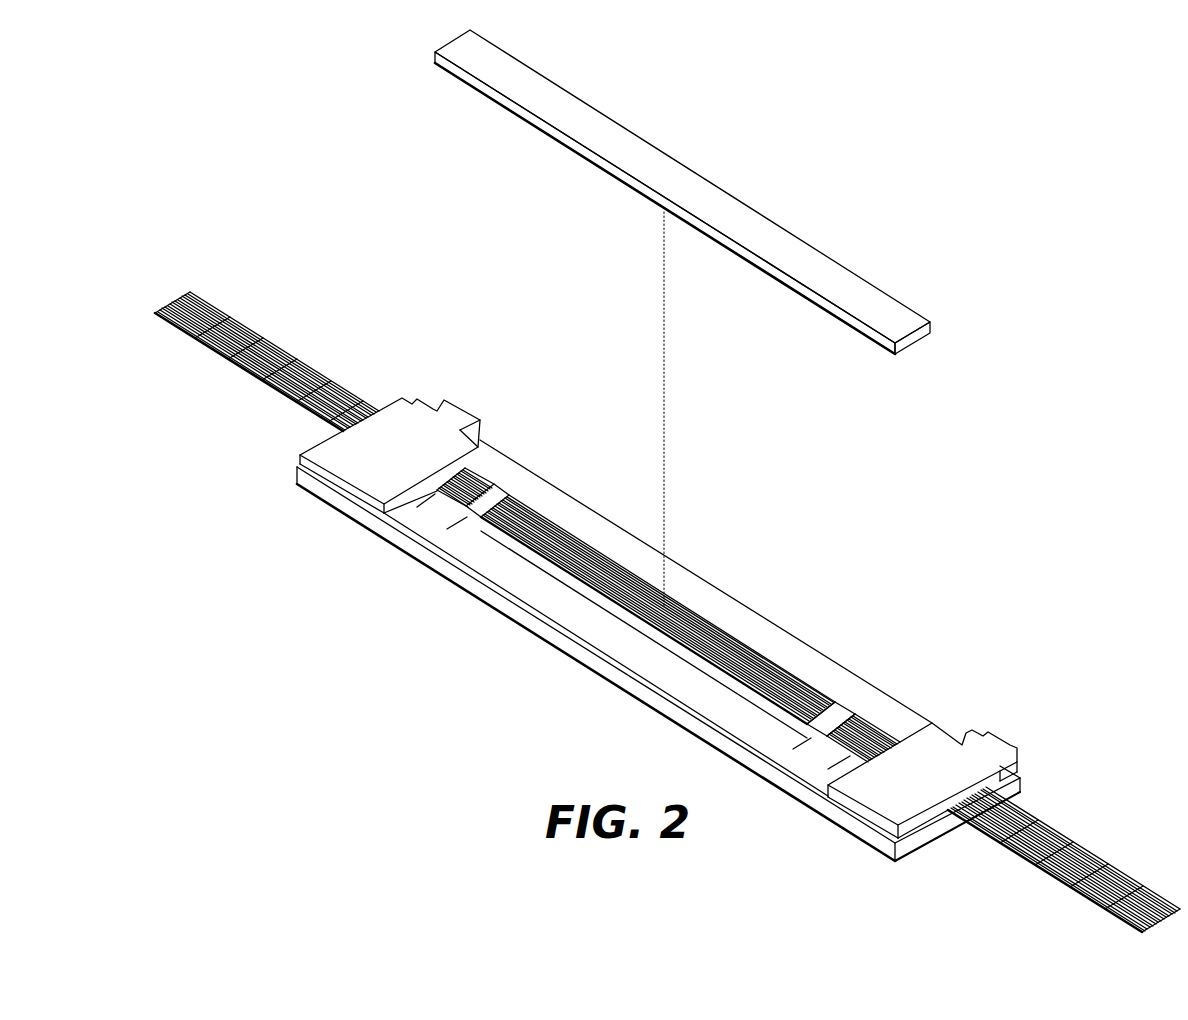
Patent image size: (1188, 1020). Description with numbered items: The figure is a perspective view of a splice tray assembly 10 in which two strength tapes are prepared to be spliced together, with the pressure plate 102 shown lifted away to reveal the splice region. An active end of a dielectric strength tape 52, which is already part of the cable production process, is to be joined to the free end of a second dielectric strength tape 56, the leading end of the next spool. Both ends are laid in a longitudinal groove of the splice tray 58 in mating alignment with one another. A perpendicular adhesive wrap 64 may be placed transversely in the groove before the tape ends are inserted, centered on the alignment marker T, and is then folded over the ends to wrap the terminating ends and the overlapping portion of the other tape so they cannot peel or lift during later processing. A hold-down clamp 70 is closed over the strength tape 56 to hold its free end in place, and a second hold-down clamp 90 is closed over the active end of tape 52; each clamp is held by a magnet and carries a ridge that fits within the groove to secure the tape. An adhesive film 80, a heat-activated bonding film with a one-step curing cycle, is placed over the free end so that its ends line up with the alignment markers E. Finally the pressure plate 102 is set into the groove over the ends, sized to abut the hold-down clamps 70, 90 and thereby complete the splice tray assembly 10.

The splice tray assembly 10 is at (1032, 232).
The pressure plate 102 is at (740, 215).
The splice tray 58 is at (586, 674).
The hold-down clamp 90 is at (374, 477).
The hold-down clamp 70 is at (890, 807).
The dielectric strength tape 52 is at (298, 343).
The dielectric strength tape 56 is at (1093, 830).
The adhesive wrap 64 is at (498, 498).
The adhesive film 80 is at (871, 734).